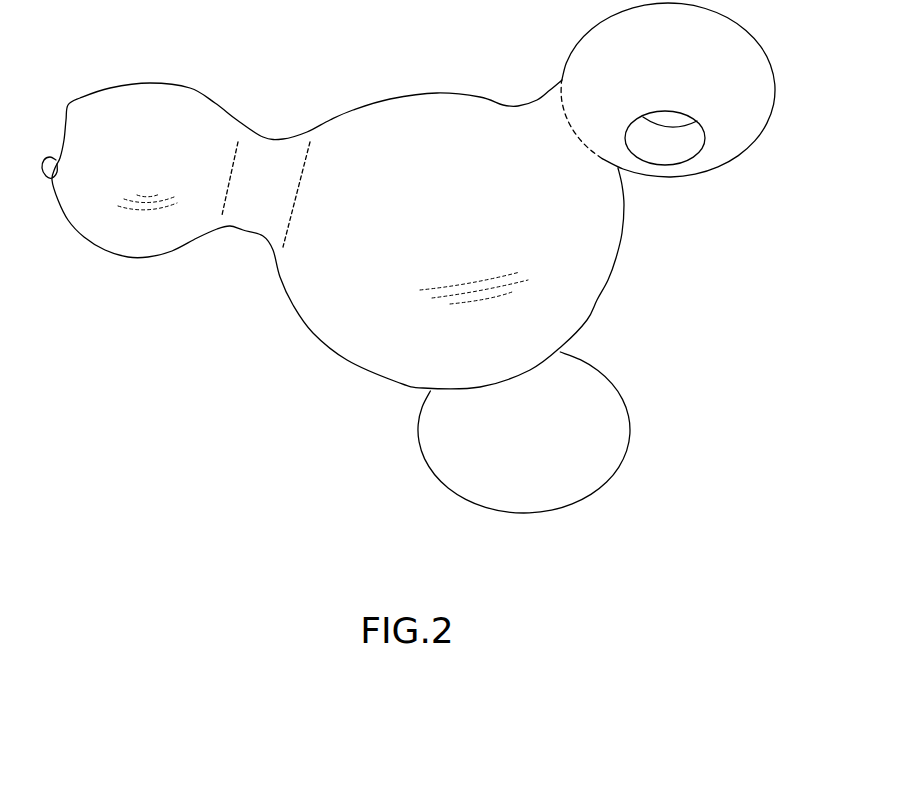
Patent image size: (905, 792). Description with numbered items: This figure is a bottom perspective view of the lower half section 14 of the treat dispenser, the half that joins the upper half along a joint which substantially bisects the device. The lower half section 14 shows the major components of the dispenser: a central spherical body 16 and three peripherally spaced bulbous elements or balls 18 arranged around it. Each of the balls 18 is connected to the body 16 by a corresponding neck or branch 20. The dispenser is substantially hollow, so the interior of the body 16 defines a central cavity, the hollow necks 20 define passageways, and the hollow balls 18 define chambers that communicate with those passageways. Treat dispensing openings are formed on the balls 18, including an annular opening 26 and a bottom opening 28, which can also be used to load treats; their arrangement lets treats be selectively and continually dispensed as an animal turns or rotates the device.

The lower half section 14 is at (333, 388).
The central spherical body 16 is at (431, 226).
The bulbous elements or balls 18 is at (141, 148).
The neck or branch 20 is at (247, 213).
The annular opening 26 is at (43, 176).
The bottom opening 28 is at (675, 150).